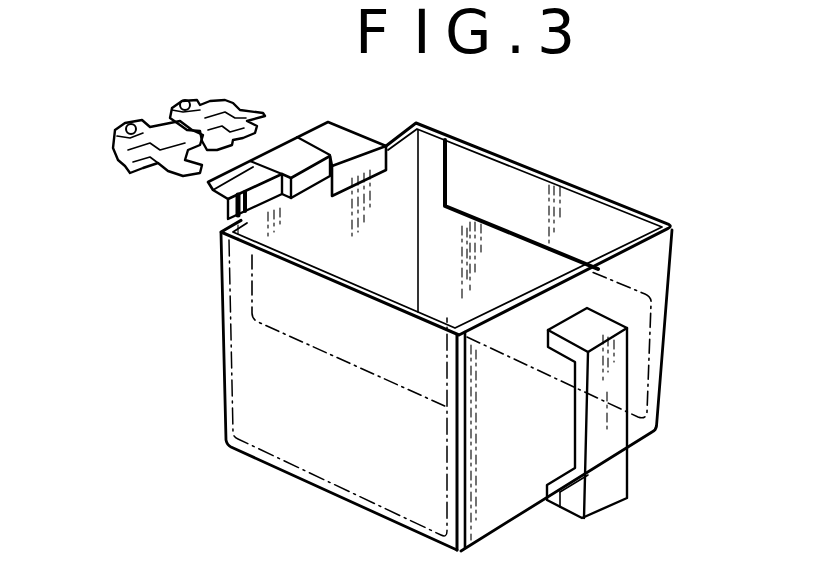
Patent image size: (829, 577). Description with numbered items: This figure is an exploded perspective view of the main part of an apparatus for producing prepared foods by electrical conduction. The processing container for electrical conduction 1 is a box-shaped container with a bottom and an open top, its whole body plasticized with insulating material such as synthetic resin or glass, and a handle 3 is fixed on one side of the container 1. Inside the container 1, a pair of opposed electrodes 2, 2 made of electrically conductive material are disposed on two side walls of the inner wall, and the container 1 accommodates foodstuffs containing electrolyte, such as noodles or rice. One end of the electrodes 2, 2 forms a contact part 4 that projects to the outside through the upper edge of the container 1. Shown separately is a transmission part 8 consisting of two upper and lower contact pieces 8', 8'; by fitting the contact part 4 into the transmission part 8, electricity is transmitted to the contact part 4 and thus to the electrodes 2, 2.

The processing container for electrical conduction 1 is at (603, 188).
The electrode 2 is at (495, 254).
The handle 3 is at (610, 472).
The contact part 4 is at (281, 121).
The transmission part 8 is at (187, 99).
The contact piece 8' is at (140, 108).